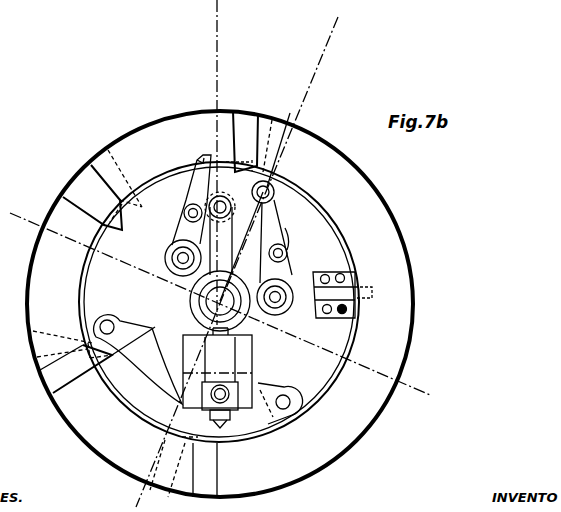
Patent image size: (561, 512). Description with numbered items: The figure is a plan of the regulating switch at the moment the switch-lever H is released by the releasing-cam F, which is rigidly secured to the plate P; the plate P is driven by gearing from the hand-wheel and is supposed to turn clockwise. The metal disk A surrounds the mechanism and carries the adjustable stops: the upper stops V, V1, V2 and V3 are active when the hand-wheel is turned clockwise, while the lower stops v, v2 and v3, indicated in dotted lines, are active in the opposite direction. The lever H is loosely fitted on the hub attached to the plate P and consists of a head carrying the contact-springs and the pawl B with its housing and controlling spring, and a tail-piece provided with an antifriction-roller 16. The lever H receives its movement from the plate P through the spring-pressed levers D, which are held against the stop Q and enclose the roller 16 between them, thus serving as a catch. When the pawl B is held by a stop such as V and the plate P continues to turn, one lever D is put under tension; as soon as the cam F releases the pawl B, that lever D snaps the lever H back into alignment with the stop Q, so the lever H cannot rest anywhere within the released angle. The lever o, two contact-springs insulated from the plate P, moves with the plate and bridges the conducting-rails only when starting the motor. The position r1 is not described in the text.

The metal disk A is at (220, 304).
The upper stop V3 is at (242, 141).
The lower stop v3 is at (276, 150).
The upper stop V2 is at (92, 197).
The lower stop v2 is at (123, 186).
The upper stop V1 is at (97, 360).
The displaced position of block r1 is at (72, 344).
The adjustable stop V is at (205, 470).
The lower stop v is at (174, 467).
The releasing-cam F is at (138, 359).
The plate P is at (281, 385).
The switch-lever H is at (217, 310).
The pawl B is at (225, 426).
The spring-pressed lever D is at (229, 235).
The antifriction-roller 16 is at (252, 190).
The stop Q is at (268, 190).
The lever o is at (342, 295).